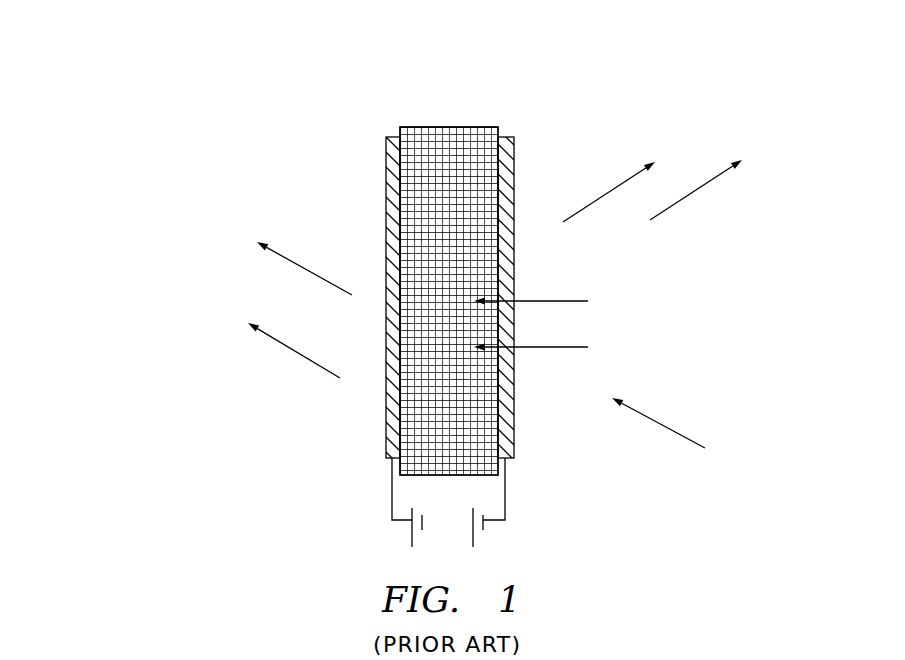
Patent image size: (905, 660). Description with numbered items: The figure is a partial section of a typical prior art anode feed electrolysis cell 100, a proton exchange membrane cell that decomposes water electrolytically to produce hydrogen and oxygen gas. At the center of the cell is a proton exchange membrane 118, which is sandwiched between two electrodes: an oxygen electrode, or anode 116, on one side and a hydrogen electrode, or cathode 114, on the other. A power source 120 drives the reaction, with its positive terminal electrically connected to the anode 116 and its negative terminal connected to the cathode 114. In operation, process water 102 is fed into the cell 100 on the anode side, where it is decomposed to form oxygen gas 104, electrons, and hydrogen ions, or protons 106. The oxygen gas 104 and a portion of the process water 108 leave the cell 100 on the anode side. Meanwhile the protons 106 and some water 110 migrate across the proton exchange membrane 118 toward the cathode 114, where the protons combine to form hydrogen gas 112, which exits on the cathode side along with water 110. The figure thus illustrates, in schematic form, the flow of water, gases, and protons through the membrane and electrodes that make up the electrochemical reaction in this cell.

The anode feed electrolysis cell 100 is at (469, 105).
The process water 102 is at (685, 436).
The oxygen gas 104 is at (633, 181).
The hydrogen ions (protons) 106 is at (556, 282).
The portion of the process water 108 is at (720, 179).
The water 110 is at (563, 347).
The hydrogen gas 112 is at (282, 254).
The hydrogen electrode (cathode) 114 is at (388, 137).
The oxygen electrode (anode) 116 is at (515, 141).
The proton exchange membrane 118 is at (413, 127).
The power source 120 is at (505, 490).